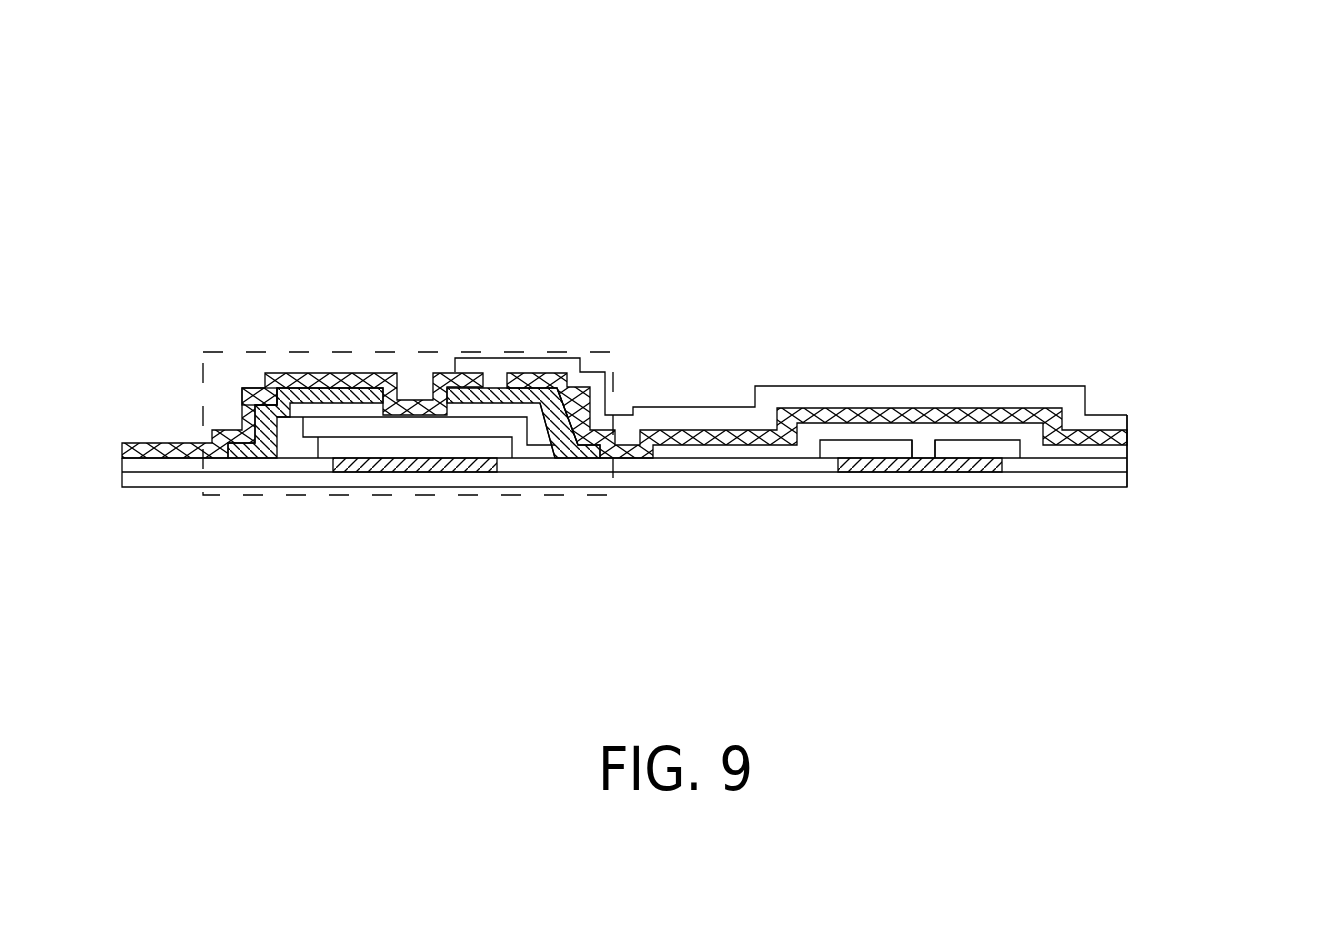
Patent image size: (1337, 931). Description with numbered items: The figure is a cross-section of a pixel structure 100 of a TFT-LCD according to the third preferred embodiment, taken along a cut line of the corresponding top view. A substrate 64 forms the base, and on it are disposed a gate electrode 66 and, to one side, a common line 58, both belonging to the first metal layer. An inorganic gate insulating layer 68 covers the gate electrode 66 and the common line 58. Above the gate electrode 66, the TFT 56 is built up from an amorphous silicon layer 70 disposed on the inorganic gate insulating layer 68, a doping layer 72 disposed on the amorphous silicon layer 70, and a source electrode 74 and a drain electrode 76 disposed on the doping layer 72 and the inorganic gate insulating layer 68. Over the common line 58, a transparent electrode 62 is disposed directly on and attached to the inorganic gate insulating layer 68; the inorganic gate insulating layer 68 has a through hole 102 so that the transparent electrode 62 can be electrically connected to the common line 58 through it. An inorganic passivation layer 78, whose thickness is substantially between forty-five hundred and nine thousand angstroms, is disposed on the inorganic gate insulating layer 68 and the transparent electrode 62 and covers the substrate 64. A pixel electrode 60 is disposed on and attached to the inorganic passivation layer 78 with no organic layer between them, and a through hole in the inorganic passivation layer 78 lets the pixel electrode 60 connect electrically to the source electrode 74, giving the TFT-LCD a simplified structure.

The pixel structure 100 is at (1160, 117).
The TFT 56 is at (262, 350).
The common line 58 is at (867, 473).
The pixel electrode 60 is at (1053, 398).
The transparent electrode 62 is at (1120, 452).
The substrate 64 is at (673, 477).
The gate electrode 66 is at (393, 465).
The inorganic gate insulating layer 68 is at (512, 465).
The amorphous silicon layer 70 is at (535, 447).
The doping layer 72 is at (358, 400).
The source electrode 74 is at (538, 395).
The drain electrode 76 is at (247, 393).
The inorganic passivation layer 78 is at (358, 373).
The through hole 102 is at (933, 428).